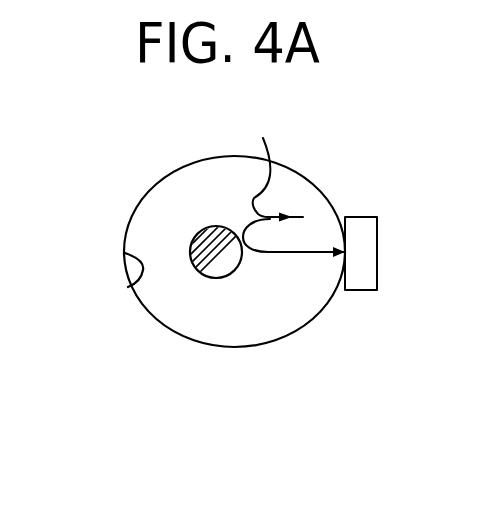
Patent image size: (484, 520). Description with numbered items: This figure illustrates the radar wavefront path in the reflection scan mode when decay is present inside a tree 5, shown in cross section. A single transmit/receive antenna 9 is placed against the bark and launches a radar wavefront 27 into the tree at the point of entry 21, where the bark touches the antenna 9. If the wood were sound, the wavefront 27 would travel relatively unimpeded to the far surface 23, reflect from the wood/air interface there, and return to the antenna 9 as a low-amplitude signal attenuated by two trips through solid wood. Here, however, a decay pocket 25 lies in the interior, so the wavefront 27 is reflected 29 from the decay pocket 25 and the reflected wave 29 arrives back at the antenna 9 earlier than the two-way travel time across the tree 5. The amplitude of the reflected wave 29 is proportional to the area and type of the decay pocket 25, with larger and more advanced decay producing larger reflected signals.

The tree 5 is at (150, 193).
The antenna 9 is at (360, 290).
The point of entry 21 is at (343, 257).
The far surface 23 is at (128, 287).
The decay pocket 25 is at (200, 274).
The radar wavefront 27 is at (288, 253).
The reflected wave 29 is at (277, 163).